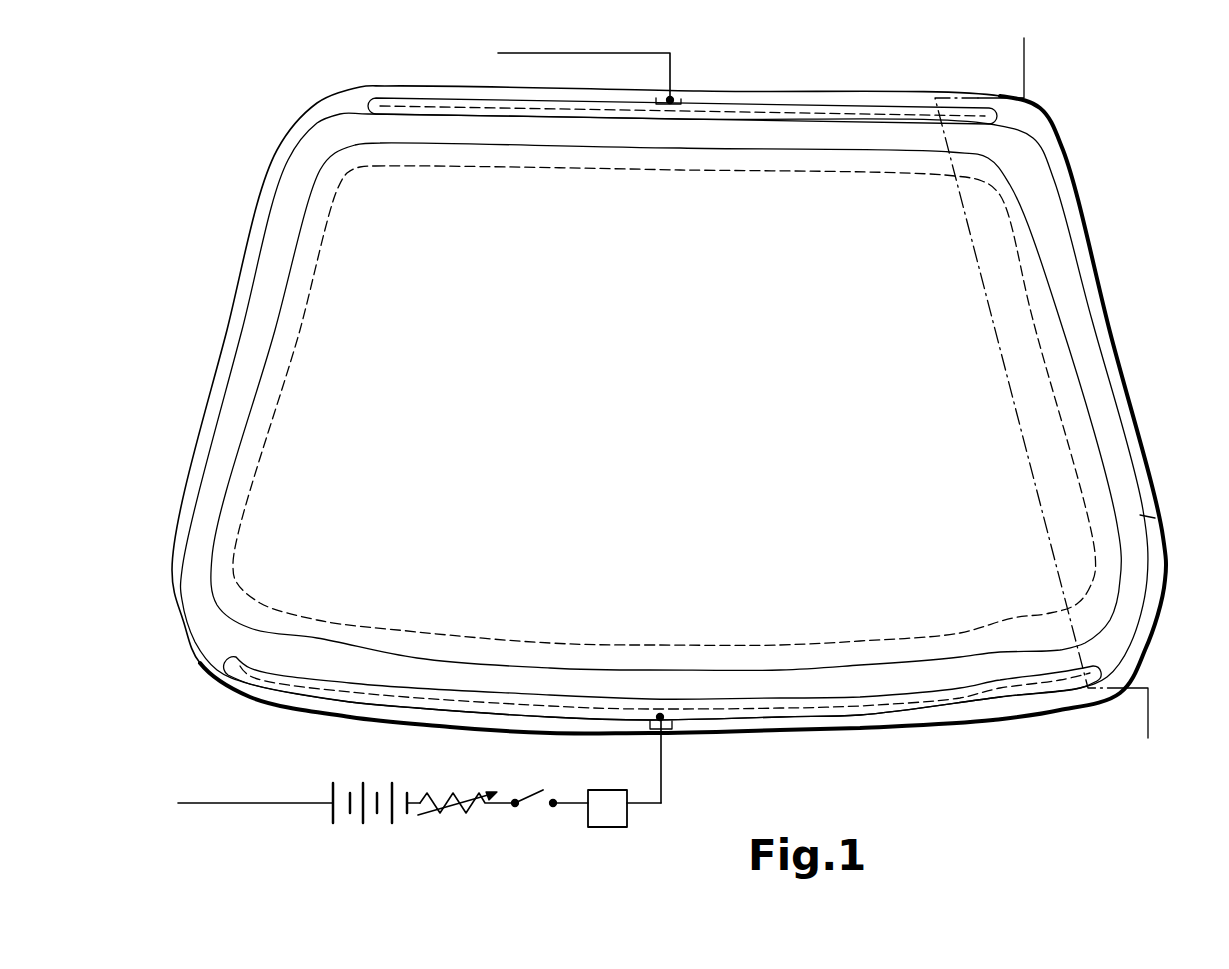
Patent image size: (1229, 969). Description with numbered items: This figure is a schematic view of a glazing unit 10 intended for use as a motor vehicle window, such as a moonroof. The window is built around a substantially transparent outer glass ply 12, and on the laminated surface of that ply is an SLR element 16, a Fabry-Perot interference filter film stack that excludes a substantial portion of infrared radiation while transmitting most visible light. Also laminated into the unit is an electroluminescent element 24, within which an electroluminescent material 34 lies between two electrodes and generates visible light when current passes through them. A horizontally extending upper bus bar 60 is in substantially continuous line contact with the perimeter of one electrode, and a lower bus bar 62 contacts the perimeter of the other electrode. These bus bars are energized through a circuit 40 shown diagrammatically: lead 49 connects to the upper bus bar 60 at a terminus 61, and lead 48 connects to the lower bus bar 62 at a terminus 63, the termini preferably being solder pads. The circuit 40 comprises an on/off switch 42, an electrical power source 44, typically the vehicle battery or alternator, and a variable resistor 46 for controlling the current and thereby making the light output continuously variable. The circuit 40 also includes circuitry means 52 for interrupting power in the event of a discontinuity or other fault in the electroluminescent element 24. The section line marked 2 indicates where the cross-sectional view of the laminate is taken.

The glazing unit 10 is at (1040, 108).
The outer glass ply 12 is at (1126, 445).
The electroluminescent element 24 is at (1148, 516).
The electroluminescent material 34 is at (992, 668).
The SLR element 16 is at (456, 172).
The upper bus bar 60 is at (782, 108).
The lower bus bar 62 is at (897, 716).
The terminus 61 is at (674, 97).
The terminus 63 is at (670, 723).
The section line 2- 2 is at (985, 53).
The electrical lead 49 is at (557, 53).
The electrical power source 44 is at (352, 825).
The variable resistor 46 is at (453, 808).
The on/off switch 42 is at (537, 793).
The circuitry means 52 is at (605, 822).
The electrical lead 48 is at (663, 800).
The circuit 40 is at (664, 783).